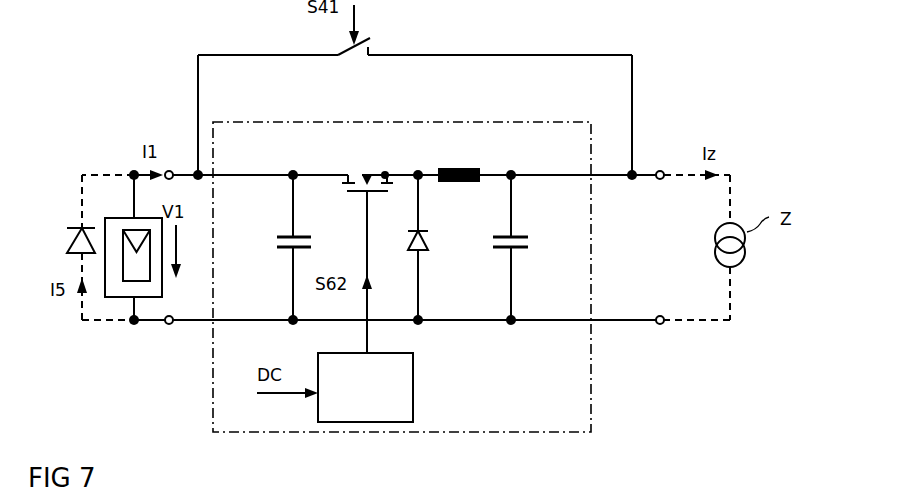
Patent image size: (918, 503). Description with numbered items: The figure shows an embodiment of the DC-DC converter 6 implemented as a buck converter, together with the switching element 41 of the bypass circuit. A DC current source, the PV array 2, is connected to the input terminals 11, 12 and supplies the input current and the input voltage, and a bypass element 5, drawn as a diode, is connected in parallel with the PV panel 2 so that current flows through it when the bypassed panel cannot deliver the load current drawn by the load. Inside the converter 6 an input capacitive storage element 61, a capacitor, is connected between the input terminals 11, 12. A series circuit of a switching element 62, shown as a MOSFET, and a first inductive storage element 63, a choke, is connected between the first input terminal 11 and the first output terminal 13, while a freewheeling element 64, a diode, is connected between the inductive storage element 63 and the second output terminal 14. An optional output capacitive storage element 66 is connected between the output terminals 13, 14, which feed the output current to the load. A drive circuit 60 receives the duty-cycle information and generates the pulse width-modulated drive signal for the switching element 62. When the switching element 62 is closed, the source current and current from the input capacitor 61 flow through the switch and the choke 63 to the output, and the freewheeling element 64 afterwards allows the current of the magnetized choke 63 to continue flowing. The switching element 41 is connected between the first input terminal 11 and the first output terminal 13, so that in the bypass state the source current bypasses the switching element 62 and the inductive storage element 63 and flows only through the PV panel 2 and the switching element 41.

The PV array 2 is at (127, 217).
The bypass element 5 is at (72, 225).
The DC-DC converter 6 is at (318, 122).
The first input terminal 11 is at (170, 166).
The second input terminal 12 is at (170, 325).
The first output terminal 13 is at (660, 166).
The second output terminal 14 is at (660, 326).
The switching element 41 is at (378, 45).
The drive circuit 60 is at (413, 392).
The input capacitive storage element 61 is at (317, 243).
The switching element 62 is at (362, 169).
The first inductive storage element 63 is at (455, 167).
The freewheeling element 64 is at (430, 240).
The output capacitive storage element 66 is at (535, 243).